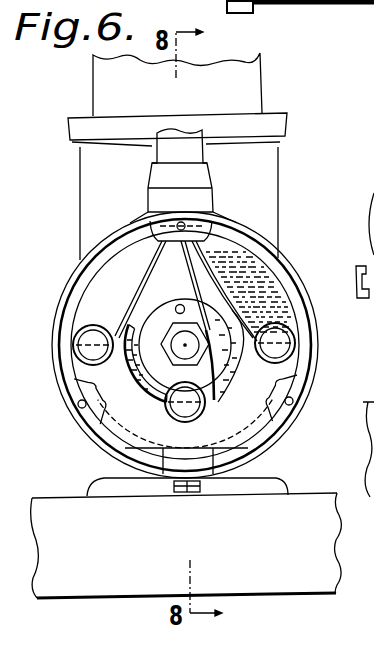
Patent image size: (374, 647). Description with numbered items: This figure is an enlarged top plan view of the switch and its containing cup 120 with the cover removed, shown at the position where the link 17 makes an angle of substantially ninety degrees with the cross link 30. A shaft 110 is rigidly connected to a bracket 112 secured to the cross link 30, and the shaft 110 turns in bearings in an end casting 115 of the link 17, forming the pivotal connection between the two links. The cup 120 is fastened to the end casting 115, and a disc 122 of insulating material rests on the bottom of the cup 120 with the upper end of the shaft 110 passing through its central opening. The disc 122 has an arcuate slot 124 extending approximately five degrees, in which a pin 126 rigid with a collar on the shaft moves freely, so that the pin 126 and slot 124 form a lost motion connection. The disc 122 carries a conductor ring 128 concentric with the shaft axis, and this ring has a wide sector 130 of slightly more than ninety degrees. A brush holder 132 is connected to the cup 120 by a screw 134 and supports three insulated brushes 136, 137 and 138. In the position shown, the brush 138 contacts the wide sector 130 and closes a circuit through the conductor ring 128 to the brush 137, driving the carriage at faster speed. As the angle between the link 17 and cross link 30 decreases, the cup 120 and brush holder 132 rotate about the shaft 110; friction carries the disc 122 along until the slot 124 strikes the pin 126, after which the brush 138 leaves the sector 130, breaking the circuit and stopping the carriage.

The link 17 is at (177, 84).
The end casting 115 is at (177, 186).
The cup 120 is at (67, 282).
The disc 122 is at (279, 295).
The arcuate slot 124 is at (175, 311).
The pin 126 is at (174, 297).
The conductor ring 128 is at (226, 378).
The wide sector 130 is at (250, 281).
The brush holder 132 is at (263, 430).
The screw 134 is at (200, 494).
The brush 136 is at (77, 358).
The brush 137 is at (171, 415).
The brush 138 is at (289, 358).
The shaft 110 is at (172, 350).
The bracket 112 is at (105, 485).
The cross link 30 is at (186, 545).